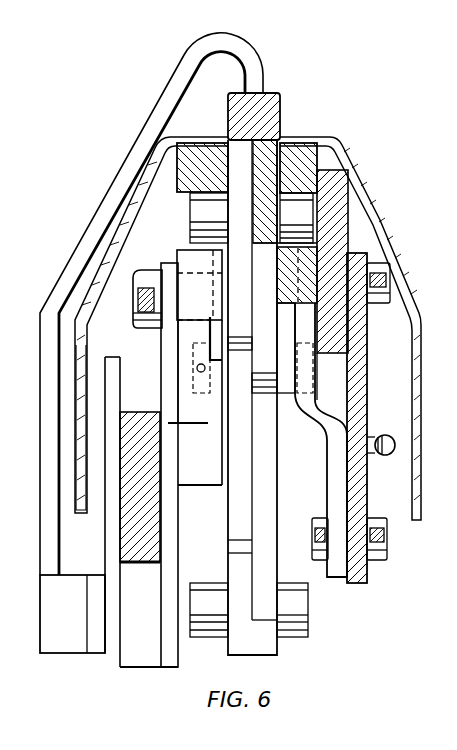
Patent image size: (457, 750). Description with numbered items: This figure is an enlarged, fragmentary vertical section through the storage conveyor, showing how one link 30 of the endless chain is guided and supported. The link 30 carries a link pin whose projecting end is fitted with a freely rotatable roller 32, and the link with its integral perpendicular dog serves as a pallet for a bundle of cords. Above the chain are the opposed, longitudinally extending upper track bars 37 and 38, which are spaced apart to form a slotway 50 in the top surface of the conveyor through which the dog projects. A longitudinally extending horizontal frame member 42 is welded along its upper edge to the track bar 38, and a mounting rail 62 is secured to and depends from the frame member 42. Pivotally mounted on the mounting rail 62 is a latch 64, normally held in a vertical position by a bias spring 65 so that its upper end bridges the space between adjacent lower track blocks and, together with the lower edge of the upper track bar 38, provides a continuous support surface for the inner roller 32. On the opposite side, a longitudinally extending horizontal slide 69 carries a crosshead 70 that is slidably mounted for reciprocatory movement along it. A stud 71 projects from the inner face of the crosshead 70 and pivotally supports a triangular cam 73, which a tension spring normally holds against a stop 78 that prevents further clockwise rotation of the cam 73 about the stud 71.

The link 30 is at (274, 438).
The roller 32 is at (195, 216).
The upper track bar 37 is at (189, 143).
The upper track bar 38 is at (310, 143).
The frame member 42 is at (347, 178).
The slotway 50 is at (232, 155).
The mounting rail 62 is at (363, 362).
The latch 64 is at (327, 476).
The bias spring 65 is at (392, 462).
The horizontal slide 69 is at (120, 540).
The crosshead 70 is at (110, 370).
The stud 71 is at (137, 297).
The cam 73 is at (203, 485).
The stop 78 is at (162, 348).